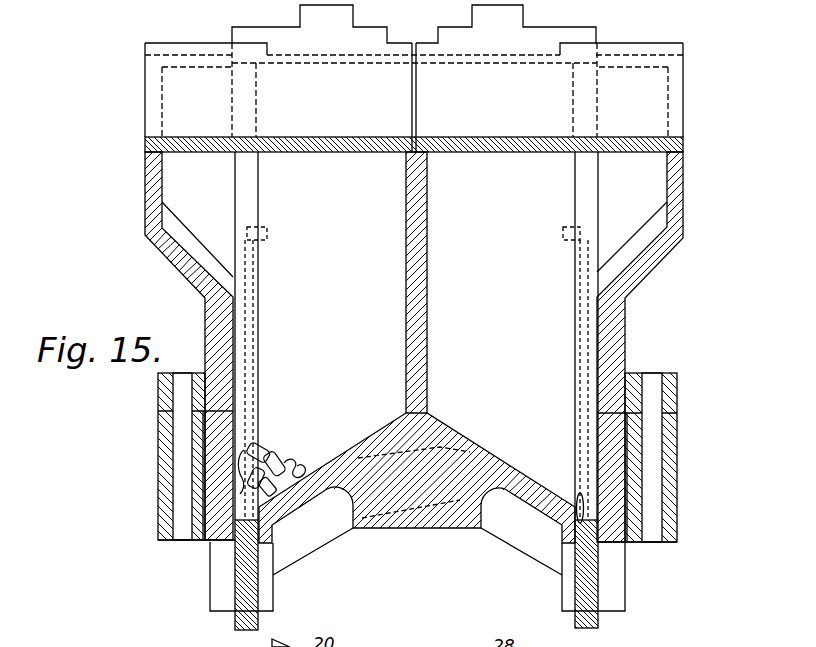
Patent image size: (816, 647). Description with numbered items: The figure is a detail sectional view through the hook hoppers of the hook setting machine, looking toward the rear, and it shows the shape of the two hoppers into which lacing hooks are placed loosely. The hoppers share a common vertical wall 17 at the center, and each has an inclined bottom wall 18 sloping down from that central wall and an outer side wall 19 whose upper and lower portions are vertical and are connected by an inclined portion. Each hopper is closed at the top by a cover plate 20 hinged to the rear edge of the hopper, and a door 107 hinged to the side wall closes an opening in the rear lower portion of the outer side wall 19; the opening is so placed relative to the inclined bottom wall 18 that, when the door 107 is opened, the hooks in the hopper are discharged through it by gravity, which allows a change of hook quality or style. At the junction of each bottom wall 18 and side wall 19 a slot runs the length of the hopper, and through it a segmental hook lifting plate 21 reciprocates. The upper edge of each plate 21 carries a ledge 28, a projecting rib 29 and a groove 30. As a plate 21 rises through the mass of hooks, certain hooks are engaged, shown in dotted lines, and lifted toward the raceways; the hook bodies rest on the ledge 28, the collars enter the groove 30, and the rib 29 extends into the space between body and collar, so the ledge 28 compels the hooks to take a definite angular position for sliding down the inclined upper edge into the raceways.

The common vertical wall 17 is at (422, 286).
The inclined bottom wall 18 is at (348, 453).
The outer side wall 19 is at (217, 332).
The cover plate 20 is at (333, 138).
The hook lifting plate 21 is at (240, 622).
The ledge 28 is at (242, 535).
The projecting rib 29 is at (624, 498).
The groove 30 is at (578, 500).
The door 107 is at (167, 439).